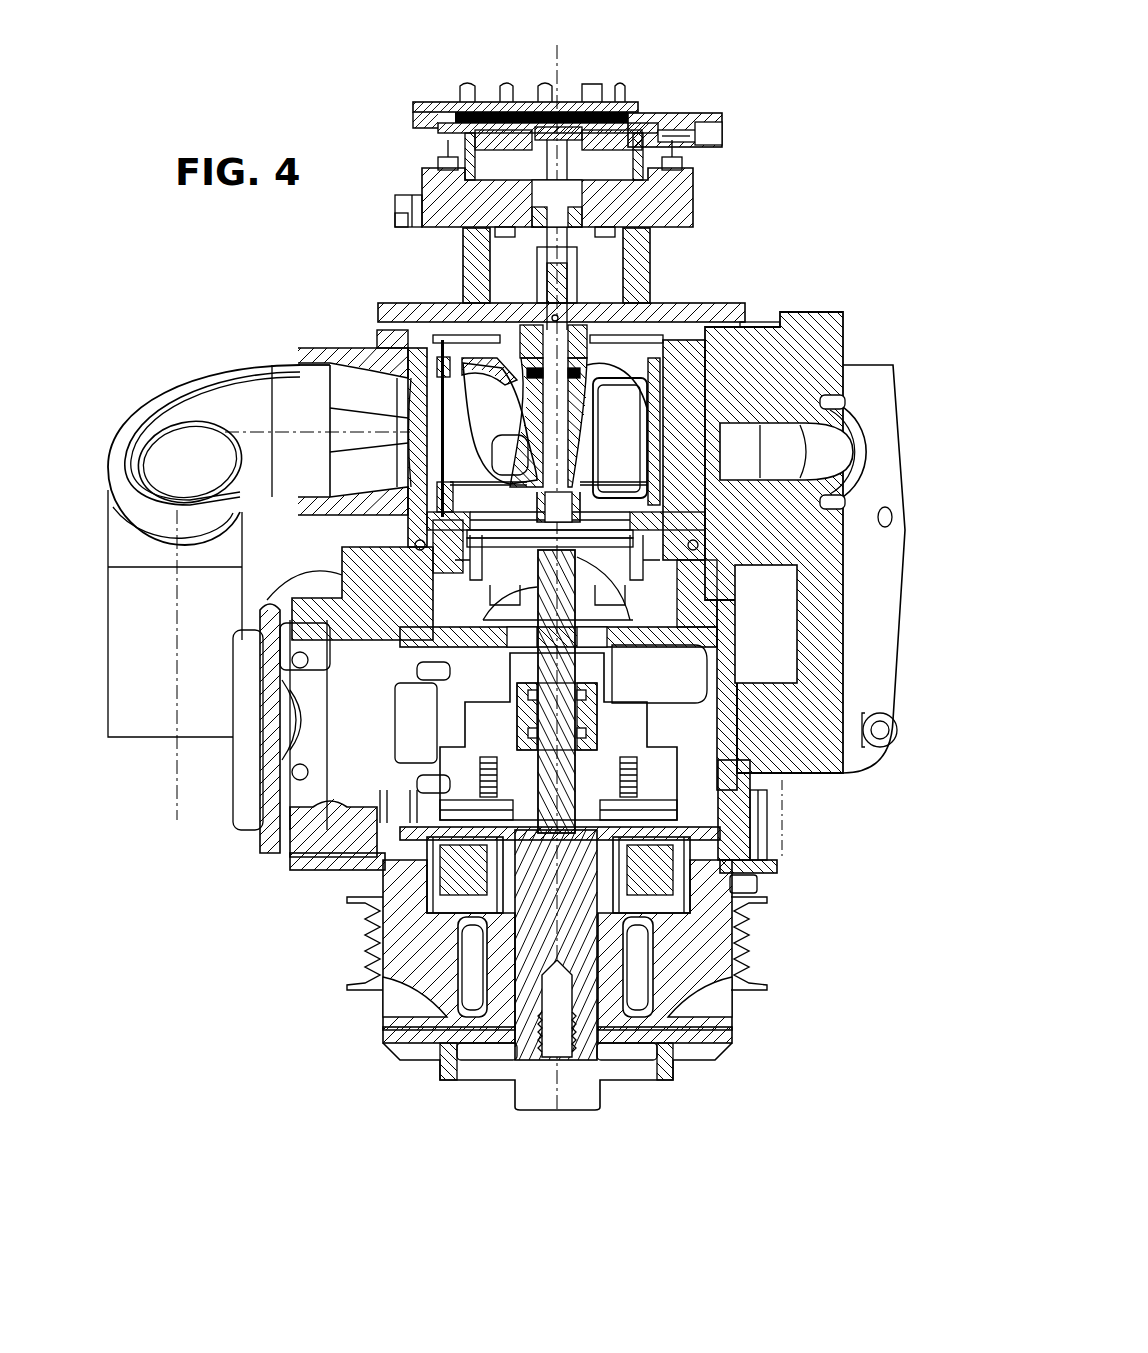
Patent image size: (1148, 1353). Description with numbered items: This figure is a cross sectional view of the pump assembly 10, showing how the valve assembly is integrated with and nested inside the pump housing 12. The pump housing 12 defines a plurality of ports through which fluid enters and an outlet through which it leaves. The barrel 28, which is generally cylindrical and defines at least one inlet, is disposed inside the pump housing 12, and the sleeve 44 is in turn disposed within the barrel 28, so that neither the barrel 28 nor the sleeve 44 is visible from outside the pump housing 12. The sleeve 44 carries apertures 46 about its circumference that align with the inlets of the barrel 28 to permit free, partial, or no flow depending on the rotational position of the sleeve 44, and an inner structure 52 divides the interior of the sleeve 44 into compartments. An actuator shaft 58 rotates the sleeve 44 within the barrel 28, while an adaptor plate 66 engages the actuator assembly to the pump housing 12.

The pump assembly 10 is at (815, 120).
The pump housing 12 is at (862, 382).
The barrel 28 is at (778, 312).
The sleeve 44 is at (690, 378).
The apertures 46 is at (628, 398).
The inner structure 52 is at (598, 372).
The actuator shaft 58 is at (565, 797).
The adaptor plate 66 is at (772, 867).